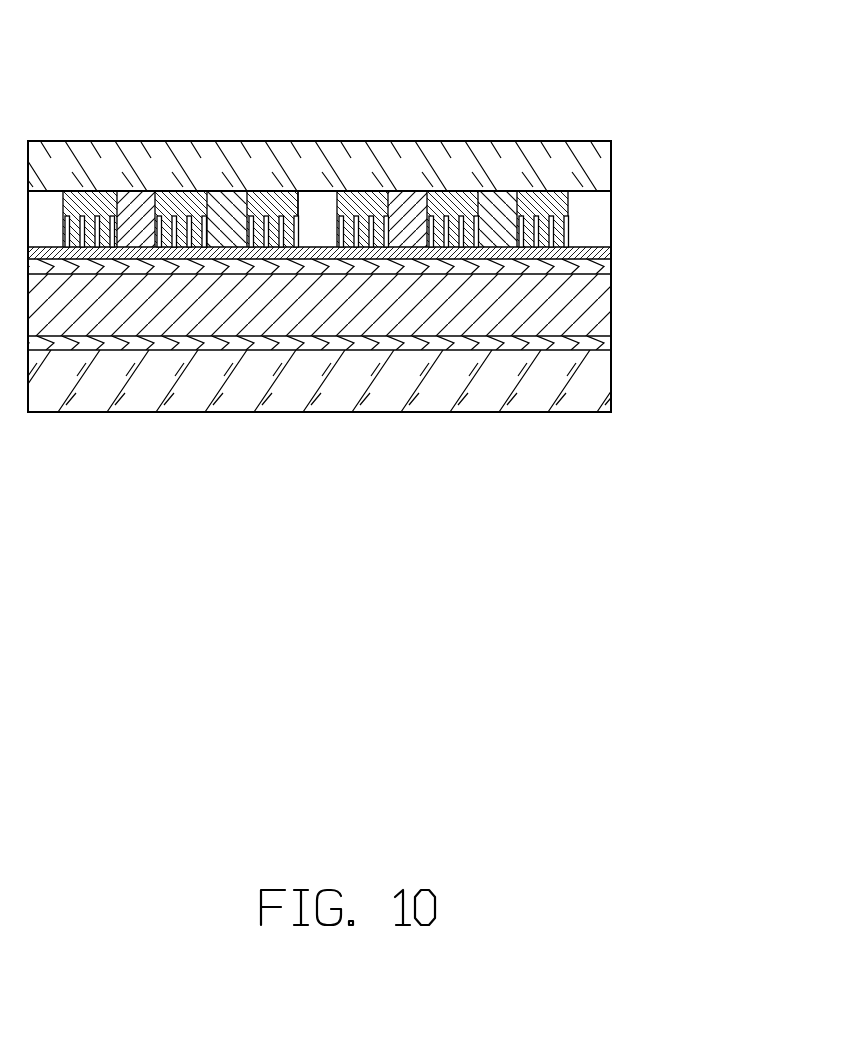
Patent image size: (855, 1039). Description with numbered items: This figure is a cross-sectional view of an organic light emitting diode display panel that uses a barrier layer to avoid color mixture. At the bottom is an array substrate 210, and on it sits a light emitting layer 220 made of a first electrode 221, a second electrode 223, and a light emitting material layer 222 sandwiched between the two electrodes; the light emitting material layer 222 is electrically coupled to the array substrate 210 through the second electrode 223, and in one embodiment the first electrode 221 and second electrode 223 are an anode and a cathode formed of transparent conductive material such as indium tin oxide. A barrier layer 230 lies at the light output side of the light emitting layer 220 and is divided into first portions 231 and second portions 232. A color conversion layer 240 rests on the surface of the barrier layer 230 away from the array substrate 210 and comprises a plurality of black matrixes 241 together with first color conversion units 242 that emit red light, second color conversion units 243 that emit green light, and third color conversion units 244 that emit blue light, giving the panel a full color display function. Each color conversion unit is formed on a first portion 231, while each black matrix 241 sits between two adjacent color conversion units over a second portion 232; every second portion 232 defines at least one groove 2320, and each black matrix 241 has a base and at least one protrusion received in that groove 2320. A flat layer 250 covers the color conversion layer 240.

The array substrate 210 is at (592, 375).
The light emitting layer 220 is at (418, 319).
The first electrode 221 is at (593, 267).
The light emitting material layer 222 is at (593, 310).
The second electrode 223 is at (593, 340).
The barrier layer 230 is at (406, 141).
The first portion 231 is at (372, 241).
The second portion 232 is at (368, 135).
The groove 2320 is at (543, 230).
The color conversion layer 240 is at (180, 135).
The black matrix 241 is at (85, 190).
The first color conversion unit 242 is at (135, 202).
The second color conversion unit 243 is at (230, 202).
The third color conversion unit 244 is at (306, 167).
The flat layer 250 is at (587, 157).